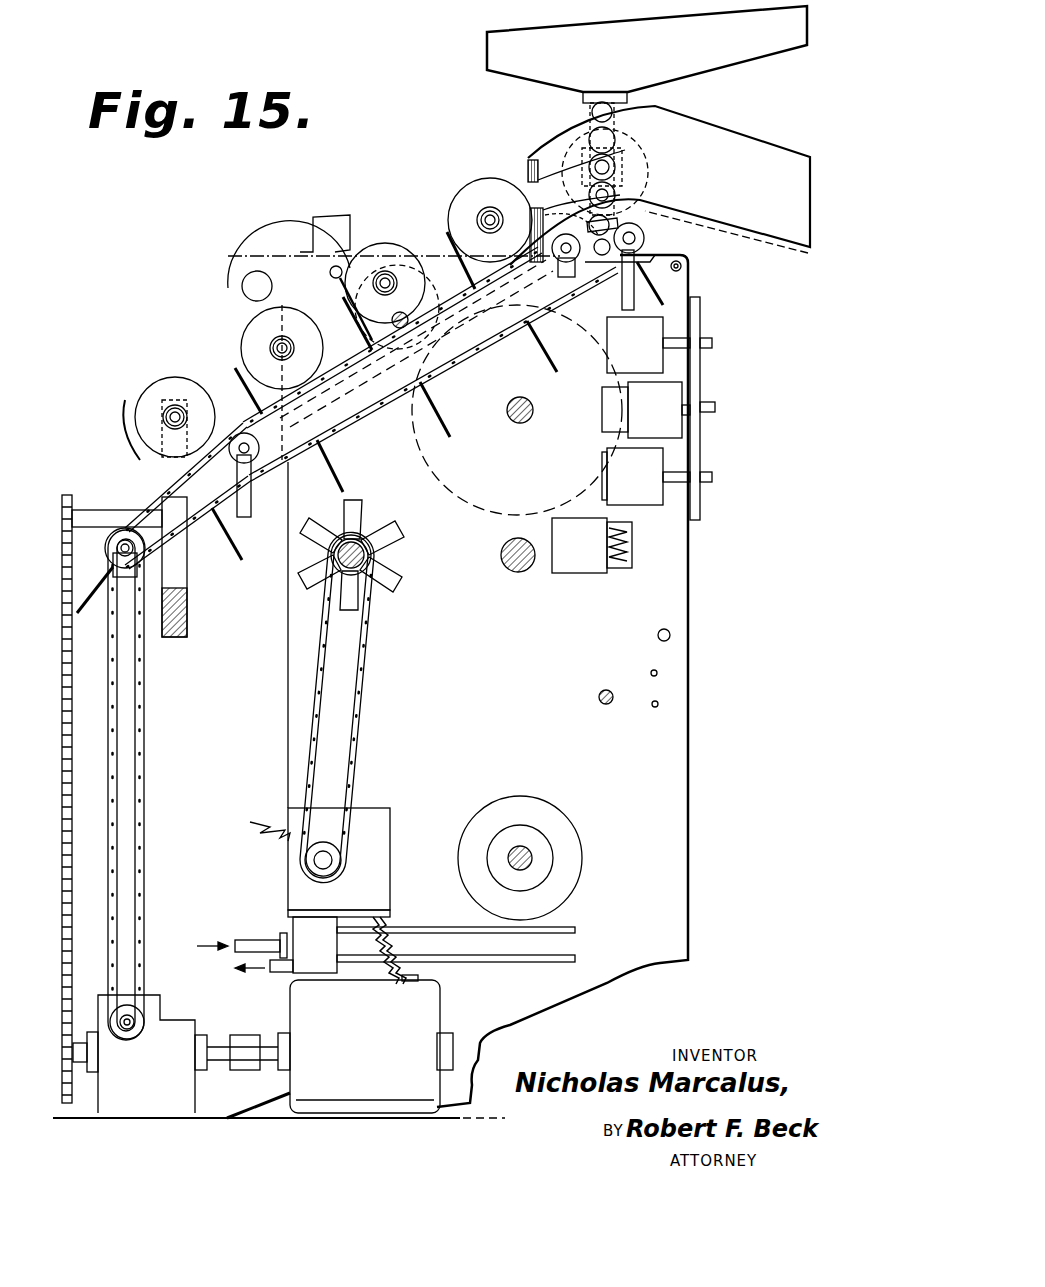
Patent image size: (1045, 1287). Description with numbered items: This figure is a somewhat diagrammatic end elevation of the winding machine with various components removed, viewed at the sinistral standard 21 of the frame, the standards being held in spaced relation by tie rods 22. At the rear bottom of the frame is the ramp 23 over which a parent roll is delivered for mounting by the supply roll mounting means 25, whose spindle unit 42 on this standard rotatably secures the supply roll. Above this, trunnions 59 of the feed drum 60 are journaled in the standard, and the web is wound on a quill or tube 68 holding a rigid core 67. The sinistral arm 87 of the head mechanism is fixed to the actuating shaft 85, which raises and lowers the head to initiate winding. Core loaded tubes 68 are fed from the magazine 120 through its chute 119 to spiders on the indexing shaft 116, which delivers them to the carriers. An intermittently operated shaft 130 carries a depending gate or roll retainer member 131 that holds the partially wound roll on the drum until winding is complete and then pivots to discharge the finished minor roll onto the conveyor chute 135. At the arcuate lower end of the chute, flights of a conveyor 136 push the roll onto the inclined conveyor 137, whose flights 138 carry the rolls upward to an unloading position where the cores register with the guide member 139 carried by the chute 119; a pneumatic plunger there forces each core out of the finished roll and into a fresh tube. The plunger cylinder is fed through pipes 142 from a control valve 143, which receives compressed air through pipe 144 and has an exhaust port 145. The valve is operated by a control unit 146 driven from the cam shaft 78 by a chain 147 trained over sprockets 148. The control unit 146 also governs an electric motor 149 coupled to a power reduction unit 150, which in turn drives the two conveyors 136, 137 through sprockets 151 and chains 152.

The magazine 120 is at (487, 46).
The chute 119 is at (585, 112).
The quill or tube 68 is at (598, 122).
The rigid core 67 is at (490, 215).
The guide member 139 is at (620, 168).
The inclined conveyor 137 is at (445, 284).
The intermittently operated shaft 130 is at (330, 264).
The sinistral arm 87 is at (323, 230).
The actuating shaft 85 is at (250, 290).
The flights 138 is at (279, 346).
The gate or roll retainer member 131 is at (483, 305).
The tie rods 22 is at (682, 266).
The indexing shaft 116 is at (640, 280).
The feed drum 60 is at (642, 411).
The trunnions 59 is at (518, 396).
The conveyor chute 135 is at (288, 465).
The sprockets 151 is at (123, 537).
The conveyor 136 is at (190, 562).
The cam shaft 78 is at (372, 556).
The chain 147 is at (375, 642).
The sprockets 148 is at (365, 588).
The chains 152 is at (145, 696).
The sinistral end section or standard 21 is at (658, 770).
The supply roll mounting means 25 is at (542, 822).
The spindle unit 42 is at (555, 855).
The pipe 144 is at (258, 938).
The exhaust port 145 is at (278, 972).
The control valve 143 is at (318, 955).
The pipes 142 is at (452, 960).
The power reduction unit 150 is at (192, 1022).
The ramp 23 is at (252, 1105).
The electric motor 149 is at (420, 1003).
The control unit 146 is at (375, 828).